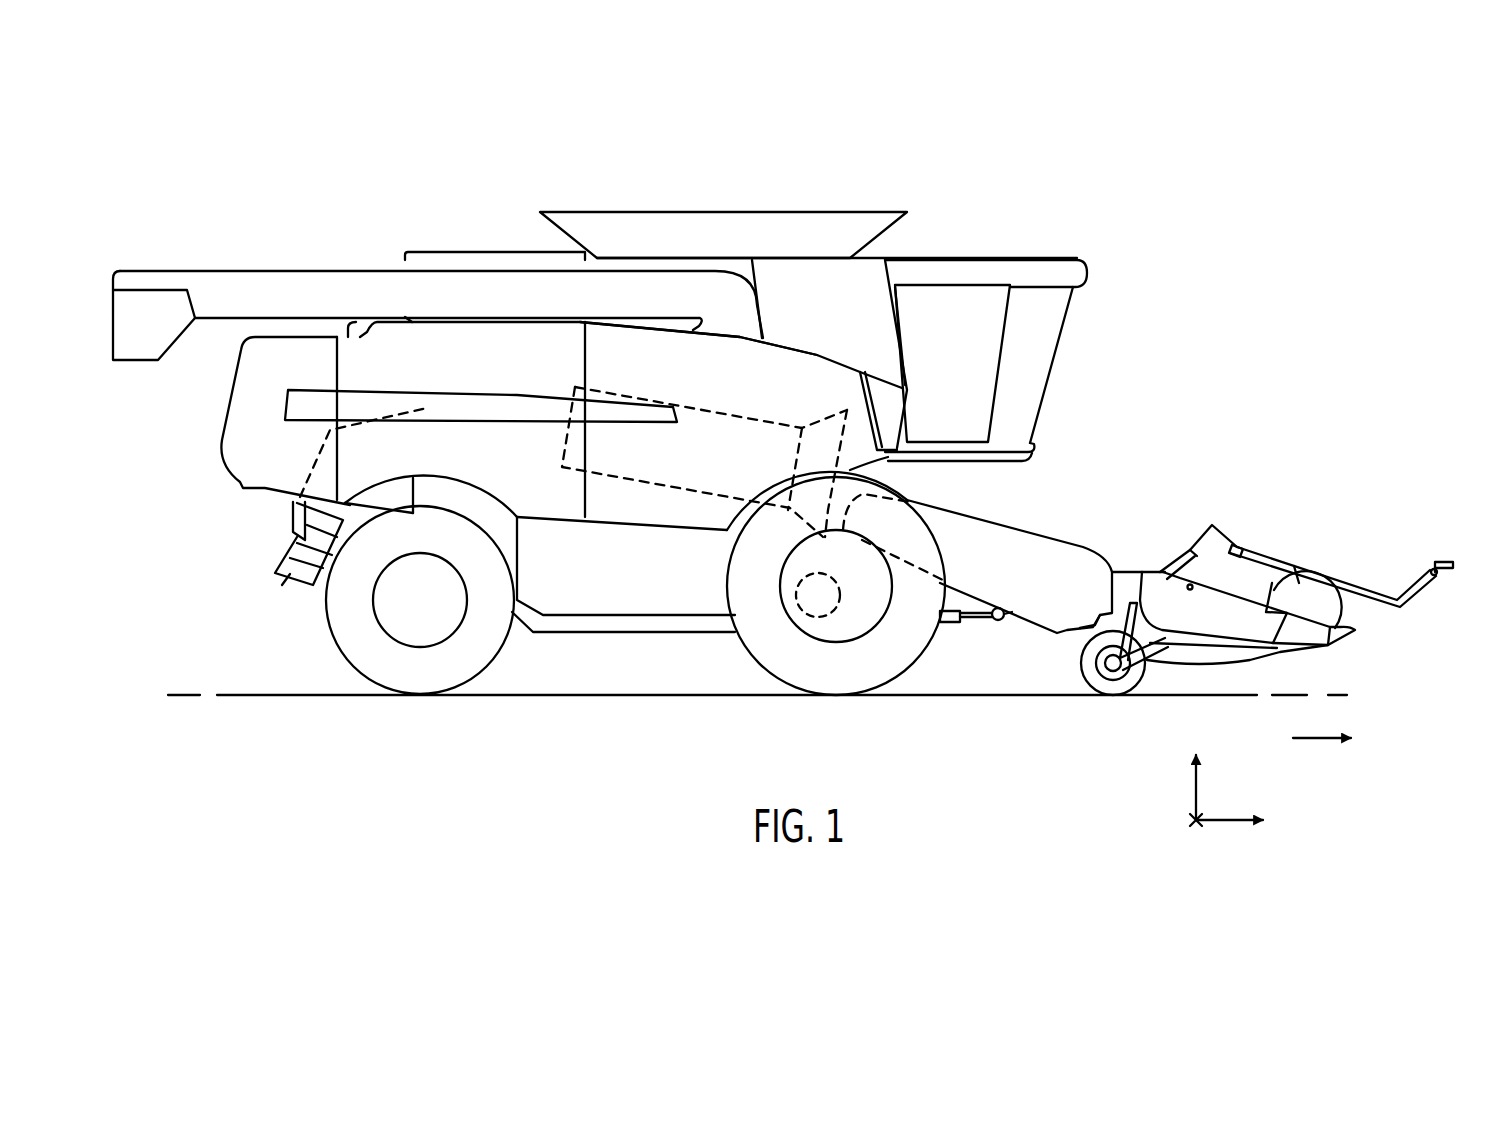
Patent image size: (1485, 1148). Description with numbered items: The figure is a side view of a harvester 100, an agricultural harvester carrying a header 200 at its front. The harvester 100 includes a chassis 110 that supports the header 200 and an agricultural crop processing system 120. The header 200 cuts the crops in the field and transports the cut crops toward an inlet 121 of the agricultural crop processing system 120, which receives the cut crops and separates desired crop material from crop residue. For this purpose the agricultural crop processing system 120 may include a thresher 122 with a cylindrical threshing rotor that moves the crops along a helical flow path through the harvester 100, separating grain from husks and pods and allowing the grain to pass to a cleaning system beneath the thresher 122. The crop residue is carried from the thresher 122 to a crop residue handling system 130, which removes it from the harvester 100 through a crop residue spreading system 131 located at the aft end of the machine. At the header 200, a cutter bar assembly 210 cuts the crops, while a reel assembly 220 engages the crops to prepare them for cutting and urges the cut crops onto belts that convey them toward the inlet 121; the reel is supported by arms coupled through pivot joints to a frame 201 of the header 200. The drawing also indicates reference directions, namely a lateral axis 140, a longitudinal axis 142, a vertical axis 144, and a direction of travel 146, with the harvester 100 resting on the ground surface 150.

The harvester 100 is at (1086, 171).
The chassis 110 is at (562, 639).
The agricultural crop processing system 120 is at (709, 386).
The inlet 121 is at (919, 494).
The thresher 122 is at (717, 412).
The crop residue handling system 130 is at (387, 382).
The crop residue spreading system 131 is at (274, 549).
The lateral axis 140 is at (1191, 819).
The longitudinal axis 142 is at (1223, 822).
The vertical axis 144 is at (1196, 792).
The direction of travel 146 is at (1317, 738).
The ground surface 150 is at (925, 696).
The header 200 is at (1222, 496).
The frame 201 is at (1150, 585).
The cutter bar assembly 210 is at (1344, 653).
The reel assembly 220 is at (1324, 556).